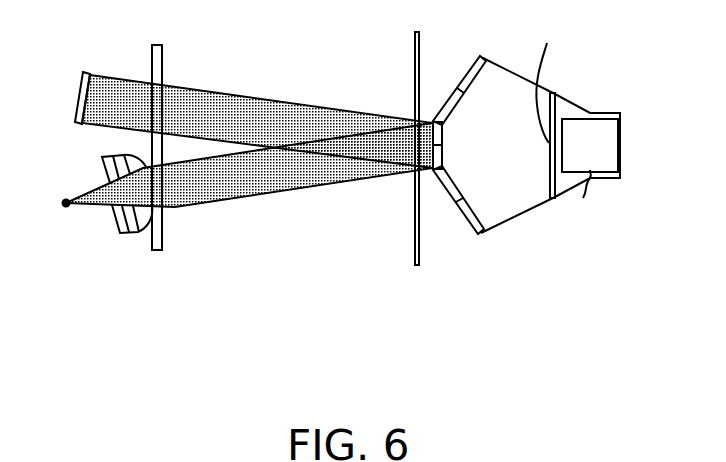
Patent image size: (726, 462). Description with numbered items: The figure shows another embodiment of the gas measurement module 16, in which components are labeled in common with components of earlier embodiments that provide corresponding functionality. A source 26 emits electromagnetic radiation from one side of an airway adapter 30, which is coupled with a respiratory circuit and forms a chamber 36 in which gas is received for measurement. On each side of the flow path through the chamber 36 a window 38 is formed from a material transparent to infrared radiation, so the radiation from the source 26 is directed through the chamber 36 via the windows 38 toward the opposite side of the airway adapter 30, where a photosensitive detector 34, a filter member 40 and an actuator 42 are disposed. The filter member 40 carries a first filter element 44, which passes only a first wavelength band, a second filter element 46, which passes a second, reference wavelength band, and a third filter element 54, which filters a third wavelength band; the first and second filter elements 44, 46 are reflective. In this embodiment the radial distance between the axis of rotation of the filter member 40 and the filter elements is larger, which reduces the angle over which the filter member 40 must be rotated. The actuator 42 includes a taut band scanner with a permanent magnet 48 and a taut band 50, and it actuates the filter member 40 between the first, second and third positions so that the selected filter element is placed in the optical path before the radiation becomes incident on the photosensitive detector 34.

The gas measurement module 16 is at (220, 215).
The source 26 is at (41, 255).
The airway adapter 30 is at (187, 290).
The photosensitive detector 34 is at (85, 72).
The chamber 36 is at (300, 222).
The window 38 is at (162, 54).
The filter member 40 is at (501, 220).
The actuator 42 is at (552, 195).
The first filter element 44 is at (469, 225).
The second filter element 46 is at (445, 140).
The permanent magnet 48 is at (605, 142).
The taut band 50 is at (549, 153).
The third filter element 54 is at (467, 72).